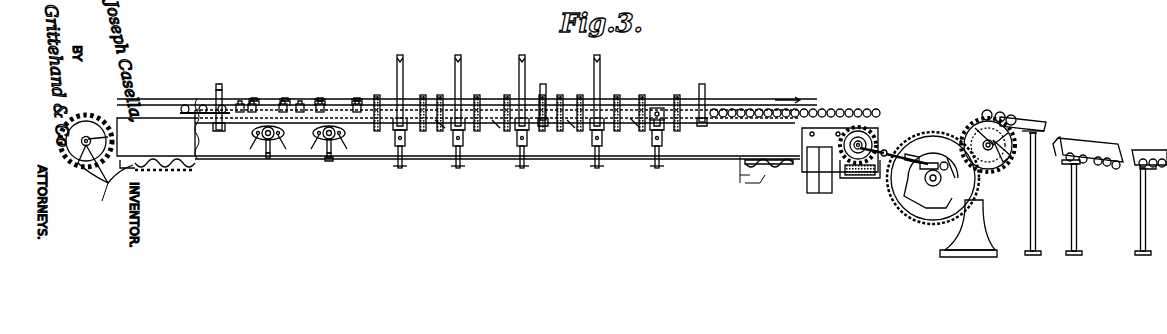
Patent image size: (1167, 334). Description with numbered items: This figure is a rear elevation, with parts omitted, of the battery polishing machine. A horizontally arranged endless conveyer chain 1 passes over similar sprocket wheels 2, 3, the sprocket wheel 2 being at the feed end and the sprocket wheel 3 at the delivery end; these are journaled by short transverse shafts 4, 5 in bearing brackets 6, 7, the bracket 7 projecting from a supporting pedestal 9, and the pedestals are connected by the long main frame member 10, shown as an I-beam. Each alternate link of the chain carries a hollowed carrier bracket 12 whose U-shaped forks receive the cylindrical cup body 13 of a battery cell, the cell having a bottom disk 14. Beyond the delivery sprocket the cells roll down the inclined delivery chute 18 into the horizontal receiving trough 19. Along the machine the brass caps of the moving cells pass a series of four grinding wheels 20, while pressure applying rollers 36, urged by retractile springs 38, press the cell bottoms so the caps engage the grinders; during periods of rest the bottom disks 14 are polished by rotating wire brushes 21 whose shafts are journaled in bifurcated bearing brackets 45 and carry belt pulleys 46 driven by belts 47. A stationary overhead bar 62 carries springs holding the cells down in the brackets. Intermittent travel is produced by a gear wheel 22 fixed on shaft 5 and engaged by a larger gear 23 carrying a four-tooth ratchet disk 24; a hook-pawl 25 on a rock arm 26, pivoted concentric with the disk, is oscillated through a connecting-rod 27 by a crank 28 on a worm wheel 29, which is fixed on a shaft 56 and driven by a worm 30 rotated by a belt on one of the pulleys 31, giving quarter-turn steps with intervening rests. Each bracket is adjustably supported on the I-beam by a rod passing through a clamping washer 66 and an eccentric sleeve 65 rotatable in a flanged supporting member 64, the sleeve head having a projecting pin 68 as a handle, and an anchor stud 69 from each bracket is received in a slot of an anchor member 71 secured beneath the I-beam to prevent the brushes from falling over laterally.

The conveyer chain 1 is at (190, 166).
The sprocket wheel 2 is at (86, 141).
The sprocket wheel 3 is at (1004, 118).
The transverse shaft 4 is at (108, 137).
The journal shaft 5 is at (1000, 164).
The bearing bracket 6 is at (122, 142).
The bearing bracket 7 is at (998, 178).
The supporting pedestal 9 is at (970, 231).
The main frame member 10 is at (731, 186).
The carrier bracket 12 is at (110, 107).
The cup body 13 is at (188, 105).
The bottom disk 14 is at (757, 108).
The delivery chute 18 is at (1048, 122).
The receiving trough 19 is at (1145, 150).
The grinding wheel 20 is at (357, 99).
The brush 21 is at (678, 95).
The gear wheel 22 is at (1008, 152).
The larger gear 23 is at (930, 216).
The ratchet disk 24 is at (920, 190).
The hook-pawl 25 is at (994, 168).
The rock arm 26 is at (942, 156).
The connecting-rod 27 is at (908, 151).
The crank 28 is at (885, 144).
The worm wheel 29 is at (840, 149).
The worm 30 is at (855, 170).
The pulley 31 is at (816, 181).
The pressure applying roller 36 is at (258, 106).
The retractile spring 38 is at (252, 126).
The bifurcated bearing bracket 45 is at (450, 135).
The belt pulley 46 is at (659, 108).
The belt 47 is at (599, 68).
The shaft 56 is at (862, 153).
The overhead bar 62 is at (220, 90).
The flanged supporting member 64 is at (250, 149).
The eccentric sleeve 65 is at (286, 149).
The clamping washer 66 is at (406, 139).
The projecting pin 68 is at (268, 153).
The anchor stud 69 is at (270, 158).
The anchor member 71 is at (330, 160).